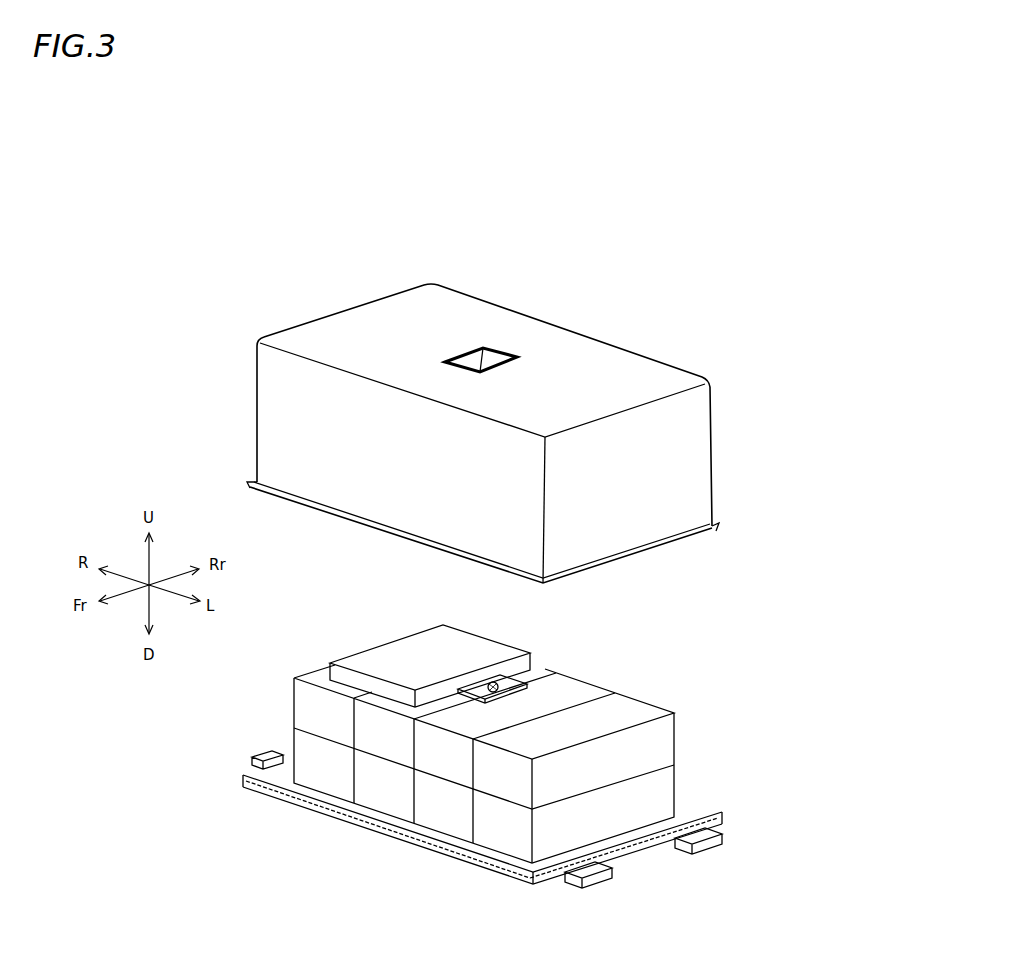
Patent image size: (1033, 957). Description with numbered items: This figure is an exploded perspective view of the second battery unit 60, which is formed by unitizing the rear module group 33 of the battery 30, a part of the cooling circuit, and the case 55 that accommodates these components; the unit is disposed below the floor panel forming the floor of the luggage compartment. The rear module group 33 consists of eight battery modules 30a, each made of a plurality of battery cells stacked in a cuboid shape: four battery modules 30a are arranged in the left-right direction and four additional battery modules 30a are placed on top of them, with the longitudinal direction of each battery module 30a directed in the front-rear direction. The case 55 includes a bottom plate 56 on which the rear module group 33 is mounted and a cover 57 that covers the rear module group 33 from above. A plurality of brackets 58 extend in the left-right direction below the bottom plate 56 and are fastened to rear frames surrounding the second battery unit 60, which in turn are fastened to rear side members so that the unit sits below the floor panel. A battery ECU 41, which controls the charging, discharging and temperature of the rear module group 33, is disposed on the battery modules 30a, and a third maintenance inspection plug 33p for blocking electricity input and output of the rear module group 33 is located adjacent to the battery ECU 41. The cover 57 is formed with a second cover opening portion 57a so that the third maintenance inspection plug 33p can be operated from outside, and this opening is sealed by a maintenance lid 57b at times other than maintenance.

The battery 30 is at (489, 769).
The battery module 30a is at (327, 710).
The rear module group 33 is at (489, 769).
The third maintenance inspection plug 33p is at (492, 682).
The battery ECU 41 is at (405, 652).
The case 55 is at (522, 563).
The bottom plate 56 is at (698, 818).
The cover 57 is at (502, 421).
The second cover opening portion 57a is at (473, 345).
The maintenance lid 57b is at (492, 350).
The bracket 58 is at (262, 757).
The second battery unit 60 is at (614, 313).